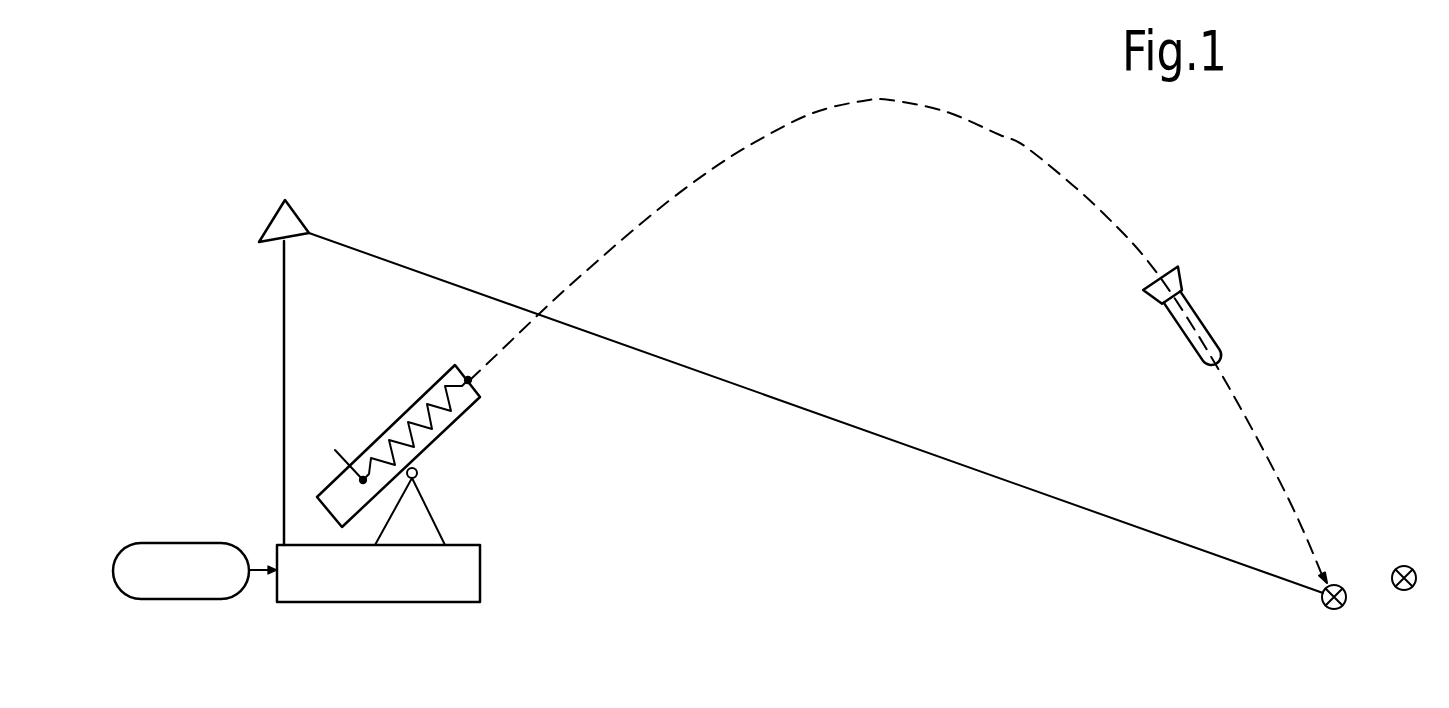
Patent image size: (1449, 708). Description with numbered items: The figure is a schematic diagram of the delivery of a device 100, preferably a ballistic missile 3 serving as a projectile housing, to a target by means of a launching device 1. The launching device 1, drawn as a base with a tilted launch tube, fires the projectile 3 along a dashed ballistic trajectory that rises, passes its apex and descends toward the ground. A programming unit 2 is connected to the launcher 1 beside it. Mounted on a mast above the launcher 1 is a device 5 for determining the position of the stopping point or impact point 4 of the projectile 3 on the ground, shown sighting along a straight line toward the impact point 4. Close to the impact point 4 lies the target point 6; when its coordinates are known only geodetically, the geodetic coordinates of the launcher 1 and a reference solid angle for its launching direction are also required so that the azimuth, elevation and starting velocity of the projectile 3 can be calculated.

The device 100 is at (1242, 250).
The launching device 1 is at (342, 587).
The programming unit 2 is at (178, 585).
The ballistic missile 3 is at (1192, 325).
The impact point 4 is at (1322, 600).
The device for determining the position of the impact point 5 is at (290, 222).
The target point 6 is at (1418, 575).